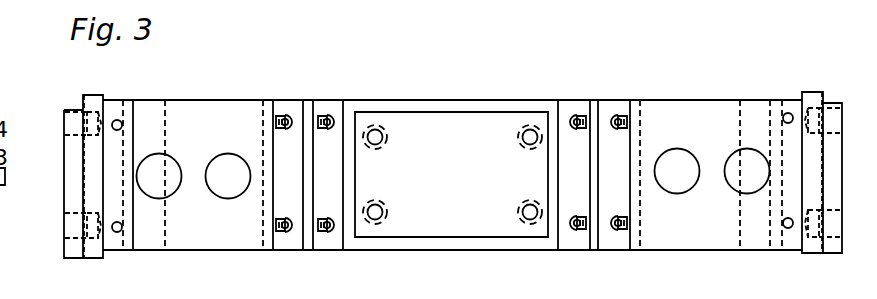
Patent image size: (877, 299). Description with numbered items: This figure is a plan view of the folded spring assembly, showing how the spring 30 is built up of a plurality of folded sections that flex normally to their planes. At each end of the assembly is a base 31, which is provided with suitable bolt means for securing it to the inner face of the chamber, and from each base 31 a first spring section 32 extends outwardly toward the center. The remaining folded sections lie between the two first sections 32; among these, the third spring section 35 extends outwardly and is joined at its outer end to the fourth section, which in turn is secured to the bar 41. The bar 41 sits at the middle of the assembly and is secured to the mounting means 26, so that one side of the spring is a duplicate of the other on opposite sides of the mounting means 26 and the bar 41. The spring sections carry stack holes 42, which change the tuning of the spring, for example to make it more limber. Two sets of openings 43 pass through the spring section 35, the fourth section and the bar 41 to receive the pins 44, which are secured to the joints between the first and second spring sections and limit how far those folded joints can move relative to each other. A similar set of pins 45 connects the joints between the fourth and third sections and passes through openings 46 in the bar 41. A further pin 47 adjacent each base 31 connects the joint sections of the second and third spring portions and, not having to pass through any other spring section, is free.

The mounting means 26 is at (460, 145).
The spring 30 is at (215, 217).
The base 31 is at (76, 172).
The first spring section 32 is at (190, 242).
The third spring section 35 is at (278, 202).
The bar 41 is at (338, 158).
The stack holes 42 is at (219, 154).
The openings 43 is at (285, 115).
The pins 44 is at (287, 131).
The pins 45 is at (327, 131).
The openings 46 is at (324, 116).
The pin 47 is at (113, 120).